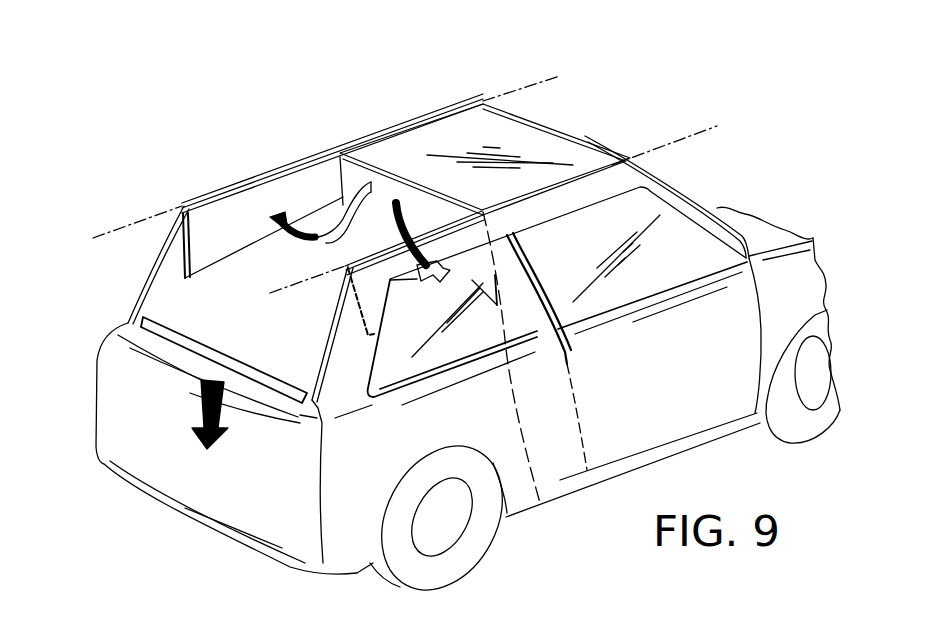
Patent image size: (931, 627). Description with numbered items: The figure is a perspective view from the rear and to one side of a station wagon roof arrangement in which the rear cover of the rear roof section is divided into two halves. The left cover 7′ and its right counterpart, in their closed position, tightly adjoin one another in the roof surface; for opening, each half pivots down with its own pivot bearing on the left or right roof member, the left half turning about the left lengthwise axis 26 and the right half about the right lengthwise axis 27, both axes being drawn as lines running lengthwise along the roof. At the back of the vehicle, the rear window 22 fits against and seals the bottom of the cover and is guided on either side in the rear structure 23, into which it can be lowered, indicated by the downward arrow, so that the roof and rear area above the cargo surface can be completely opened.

The left cover 7′ is at (223, 215).
The rear window 22 is at (135, 320).
The rear structure 23 is at (200, 481).
The left lengthwise axis 26 is at (512, 92).
The right lengthwise axis 27 is at (680, 138).